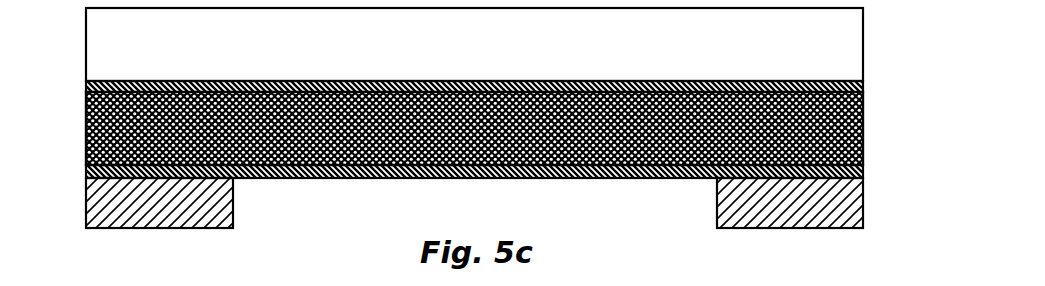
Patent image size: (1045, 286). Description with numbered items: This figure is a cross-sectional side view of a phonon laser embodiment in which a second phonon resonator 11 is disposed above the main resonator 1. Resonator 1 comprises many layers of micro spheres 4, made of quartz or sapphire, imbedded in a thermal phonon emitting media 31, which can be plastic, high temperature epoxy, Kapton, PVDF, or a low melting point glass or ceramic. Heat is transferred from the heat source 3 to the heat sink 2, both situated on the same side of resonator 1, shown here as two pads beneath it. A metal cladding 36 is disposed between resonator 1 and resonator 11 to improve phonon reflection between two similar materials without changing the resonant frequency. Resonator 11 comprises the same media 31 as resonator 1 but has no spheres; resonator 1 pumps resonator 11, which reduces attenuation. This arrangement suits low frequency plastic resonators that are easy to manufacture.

The resonator 1 is at (86, 128).
The heat sink 2 is at (738, 216).
The heat source 3 is at (128, 207).
The micro spheres 4 is at (857, 137).
The second phonon resonator 11 is at (848, 50).
The thermal phonon emitting media 31 is at (863, 117).
The metal cladding 36 is at (88, 87).